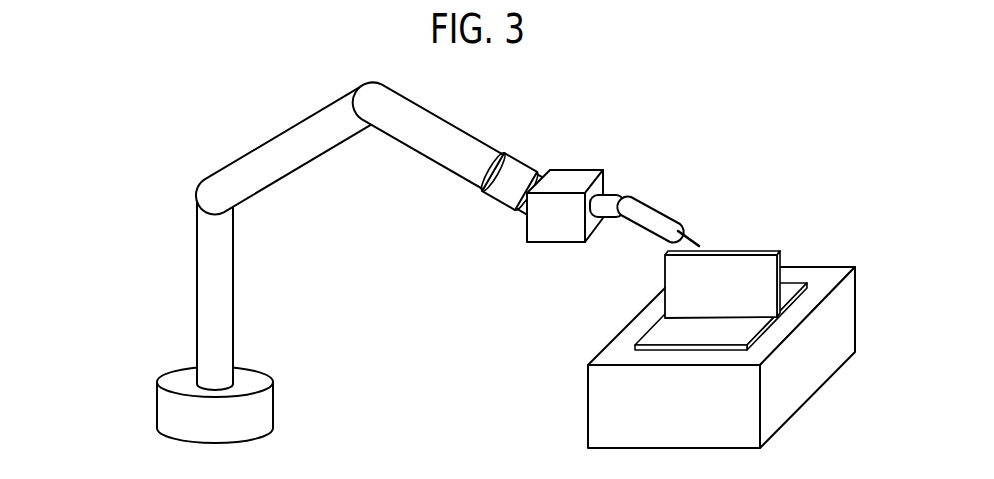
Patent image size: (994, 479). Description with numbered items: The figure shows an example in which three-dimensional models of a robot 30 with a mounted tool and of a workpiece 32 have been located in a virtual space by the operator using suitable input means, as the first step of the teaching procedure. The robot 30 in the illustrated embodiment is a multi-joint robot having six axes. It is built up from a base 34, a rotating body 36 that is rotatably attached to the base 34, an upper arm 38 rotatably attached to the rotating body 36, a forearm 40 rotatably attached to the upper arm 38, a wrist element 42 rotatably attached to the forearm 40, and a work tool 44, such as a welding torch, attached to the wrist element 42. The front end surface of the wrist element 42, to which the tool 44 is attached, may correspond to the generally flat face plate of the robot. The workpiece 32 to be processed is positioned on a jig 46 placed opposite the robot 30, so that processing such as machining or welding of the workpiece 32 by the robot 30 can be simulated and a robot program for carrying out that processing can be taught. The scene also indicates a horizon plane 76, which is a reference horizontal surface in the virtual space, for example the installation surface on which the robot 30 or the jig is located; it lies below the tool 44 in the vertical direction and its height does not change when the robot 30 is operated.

The robot 30 is at (392, 256).
The workpiece 32 is at (748, 226).
The base 34 is at (172, 412).
The rotating body 36 is at (212, 283).
The upper arm 38 is at (263, 160).
The forearm 40 is at (468, 156).
The wrist element 42 is at (515, 178).
The work tool 44 is at (553, 228).
The jig 46 is at (802, 378).
The horizon plane 76 is at (429, 403).